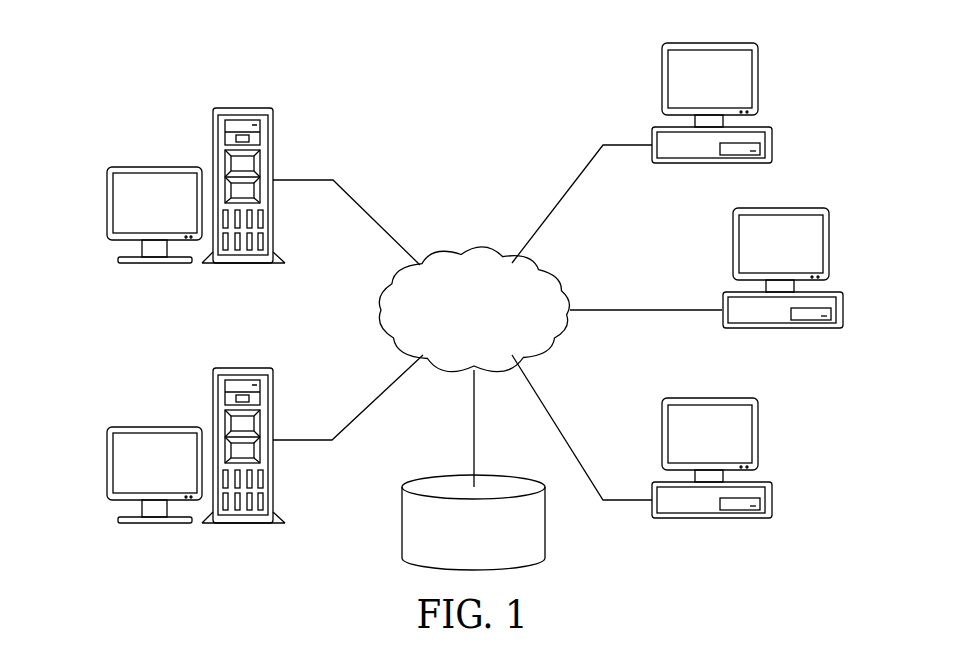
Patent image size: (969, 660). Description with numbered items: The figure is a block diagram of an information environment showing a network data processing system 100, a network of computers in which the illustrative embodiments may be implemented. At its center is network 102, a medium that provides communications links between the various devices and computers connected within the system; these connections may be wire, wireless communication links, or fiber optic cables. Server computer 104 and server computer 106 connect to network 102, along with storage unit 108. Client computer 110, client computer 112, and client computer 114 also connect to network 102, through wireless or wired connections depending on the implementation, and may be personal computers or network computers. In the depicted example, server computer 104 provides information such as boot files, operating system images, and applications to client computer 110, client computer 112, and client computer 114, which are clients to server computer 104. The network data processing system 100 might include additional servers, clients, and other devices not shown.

The network data processing system 100 is at (334, 89).
The network 102 is at (447, 259).
The server computer 104 is at (107, 202).
The server computer 106 is at (107, 465).
The storage unit 108 is at (402, 522).
The client computer 110 is at (772, 135).
The client computer 112 is at (842, 320).
The client computer 114 is at (772, 508).